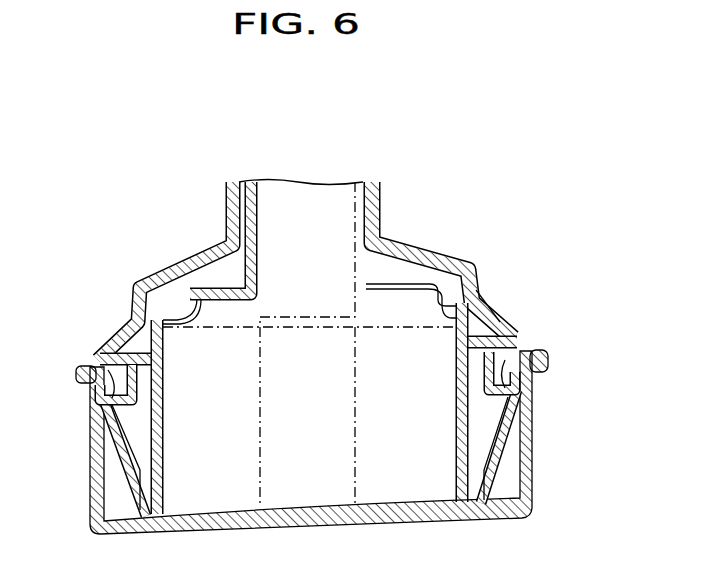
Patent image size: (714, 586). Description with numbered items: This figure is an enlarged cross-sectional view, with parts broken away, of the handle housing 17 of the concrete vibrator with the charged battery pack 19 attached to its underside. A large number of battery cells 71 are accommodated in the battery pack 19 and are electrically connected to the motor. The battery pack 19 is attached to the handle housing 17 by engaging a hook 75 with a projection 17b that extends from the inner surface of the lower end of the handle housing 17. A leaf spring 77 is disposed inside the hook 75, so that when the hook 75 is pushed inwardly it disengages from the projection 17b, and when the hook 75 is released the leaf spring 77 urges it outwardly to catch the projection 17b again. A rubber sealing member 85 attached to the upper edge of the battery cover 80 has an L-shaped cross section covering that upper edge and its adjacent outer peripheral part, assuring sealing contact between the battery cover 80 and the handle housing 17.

The handle housing 17 is at (208, 257).
The projection 17b is at (113, 380).
The battery pack 19 is at (440, 308).
The battery cells 71 is at (315, 210).
The hook 75 is at (533, 400).
The leaf spring 77 is at (535, 456).
The battery cover 80 is at (470, 526).
The rubber sealing member 85 is at (548, 352).